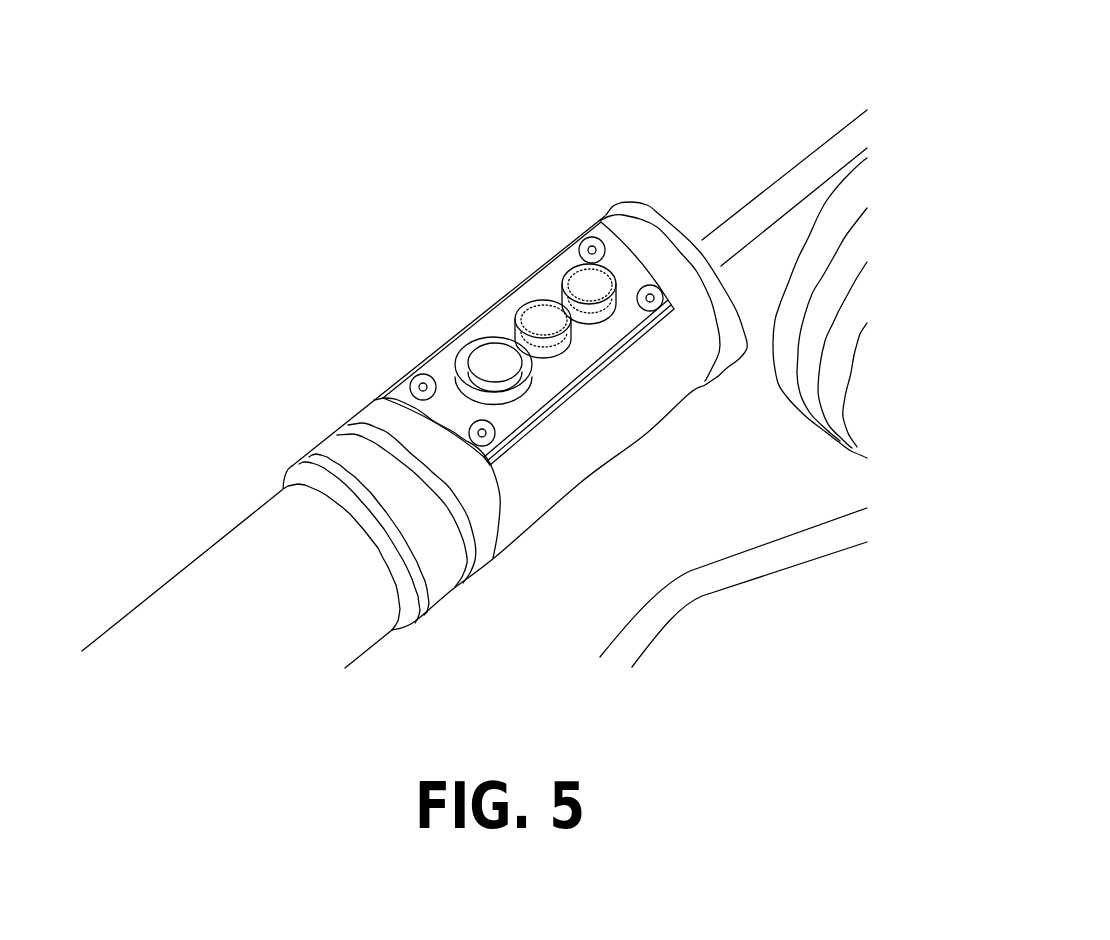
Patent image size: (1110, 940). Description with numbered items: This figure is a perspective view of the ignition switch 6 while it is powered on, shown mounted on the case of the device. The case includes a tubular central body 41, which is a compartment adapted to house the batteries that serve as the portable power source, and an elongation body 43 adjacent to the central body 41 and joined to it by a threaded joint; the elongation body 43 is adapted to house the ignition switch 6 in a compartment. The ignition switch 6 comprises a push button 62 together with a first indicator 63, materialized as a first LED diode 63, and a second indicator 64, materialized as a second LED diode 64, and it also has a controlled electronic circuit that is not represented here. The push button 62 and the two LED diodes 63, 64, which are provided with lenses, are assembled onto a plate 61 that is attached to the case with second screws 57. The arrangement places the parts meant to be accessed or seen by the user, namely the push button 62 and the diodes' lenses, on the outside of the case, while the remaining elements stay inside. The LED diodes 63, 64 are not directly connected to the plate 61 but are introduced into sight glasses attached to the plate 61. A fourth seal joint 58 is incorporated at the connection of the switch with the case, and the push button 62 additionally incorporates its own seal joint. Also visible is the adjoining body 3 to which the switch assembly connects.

The handle body 3 is at (803, 183).
The central body 41 is at (262, 577).
The elongation body 43 is at (568, 457).
The ignition switch 6 is at (560, 527).
The second screws 57 is at (657, 303).
The fourth seal joint 58 is at (603, 368).
The plate 61 is at (621, 279).
The push button 62 is at (488, 365).
The first indicator 63 is at (540, 317).
The second indicator 64 is at (585, 290).